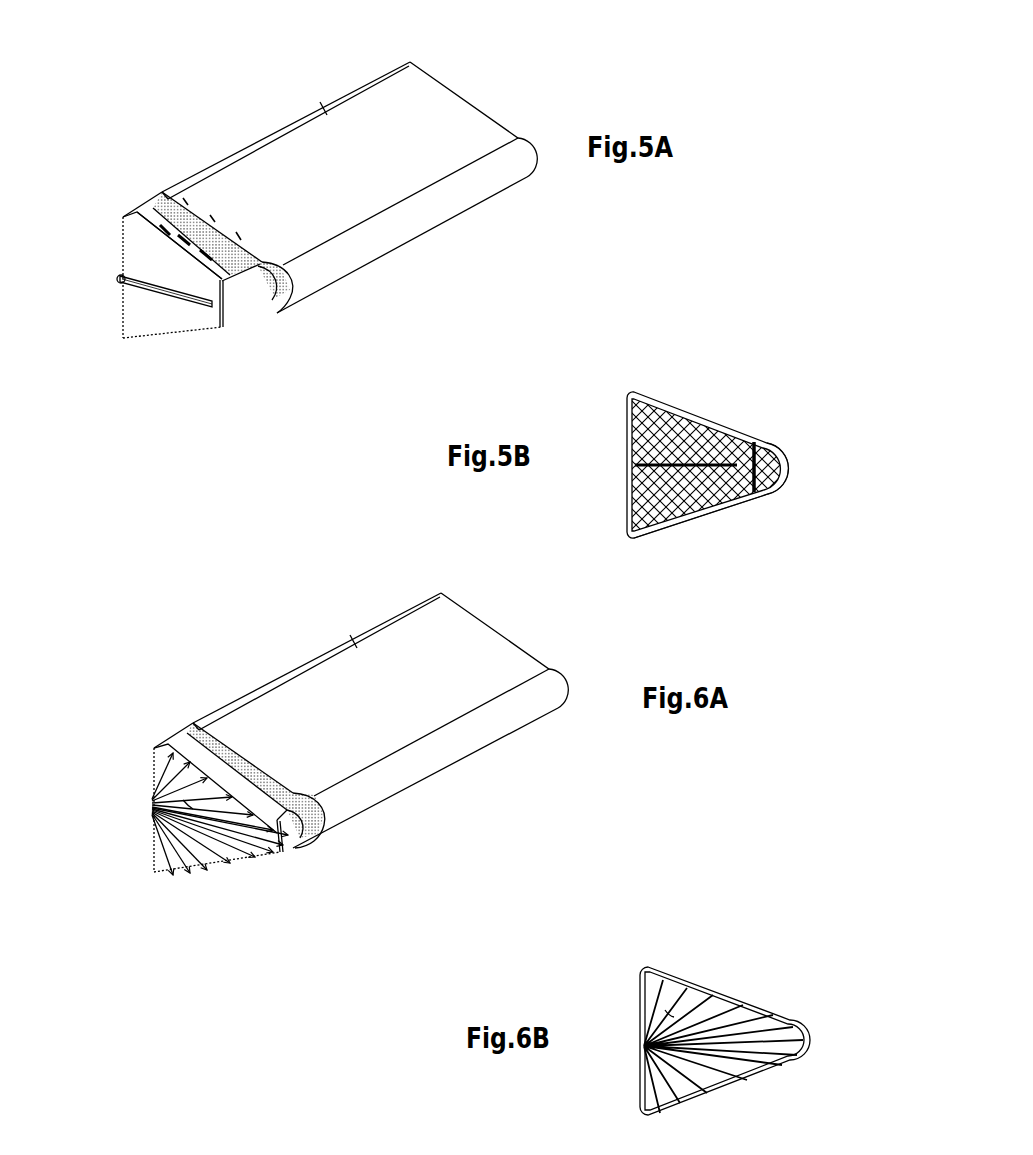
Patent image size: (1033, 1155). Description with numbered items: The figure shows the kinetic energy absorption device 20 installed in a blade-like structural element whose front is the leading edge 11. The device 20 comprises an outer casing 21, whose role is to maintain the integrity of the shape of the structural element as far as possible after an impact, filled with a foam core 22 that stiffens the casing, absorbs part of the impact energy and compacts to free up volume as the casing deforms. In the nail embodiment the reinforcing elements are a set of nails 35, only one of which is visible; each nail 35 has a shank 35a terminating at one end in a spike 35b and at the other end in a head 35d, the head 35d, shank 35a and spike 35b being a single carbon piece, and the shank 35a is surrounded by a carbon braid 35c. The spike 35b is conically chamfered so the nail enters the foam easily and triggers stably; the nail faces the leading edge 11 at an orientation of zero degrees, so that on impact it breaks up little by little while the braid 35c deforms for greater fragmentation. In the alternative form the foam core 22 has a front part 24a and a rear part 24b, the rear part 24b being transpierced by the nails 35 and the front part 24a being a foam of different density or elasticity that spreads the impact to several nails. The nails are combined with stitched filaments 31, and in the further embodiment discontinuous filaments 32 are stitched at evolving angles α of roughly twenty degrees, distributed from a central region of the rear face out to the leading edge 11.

In FIG. 5A, the leading edge 11 is at (423, 231).
In FIG. 5A, the kinetic energy absorption device 20 is at (326, 200).
In FIG. 6A, the kinetic energy absorption device 20 is at (362, 730).
In FIG. 5A, the outer casing 21 is at (163, 191).
In FIG. 6A, the outer casing 21 is at (194, 720).
In FIG. 5A, the foam core 22 is at (154, 207).
In FIG. 6A, the foam core 22 is at (297, 848).
In FIG. 6B, the foam core 22 is at (796, 1015).
In FIG. 5A, the front part 24a is at (244, 320).
In FIG. 5B, the front part 24a is at (778, 464).
In FIG. 5A, the rear part 24b is at (137, 216).
In FIG. 5B, the rear part 24b is at (679, 515).
In FIG. 5B, the filaments 31 is at (710, 428).
In FIG. 6A, the discontinuous filaments 32 is at (152, 778).
In FIG. 6B, the discontinuous filaments 32 is at (763, 1000).
In FIG. 5A, the nail 35 is at (147, 312).
In FIG. 5B, the nail 35 is at (628, 465).
In FIG. 5A, the shank 35a is at (154, 340).
In FIG. 5A, the spike 35b is at (210, 333).
In FIG. 5A, the carbon braid 35c is at (181, 333).
In FIG. 5A, the head 35d is at (119, 281).